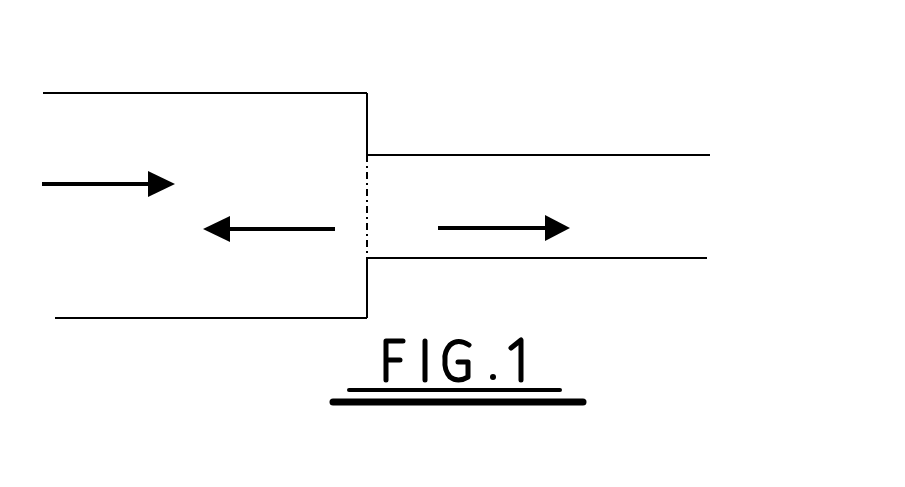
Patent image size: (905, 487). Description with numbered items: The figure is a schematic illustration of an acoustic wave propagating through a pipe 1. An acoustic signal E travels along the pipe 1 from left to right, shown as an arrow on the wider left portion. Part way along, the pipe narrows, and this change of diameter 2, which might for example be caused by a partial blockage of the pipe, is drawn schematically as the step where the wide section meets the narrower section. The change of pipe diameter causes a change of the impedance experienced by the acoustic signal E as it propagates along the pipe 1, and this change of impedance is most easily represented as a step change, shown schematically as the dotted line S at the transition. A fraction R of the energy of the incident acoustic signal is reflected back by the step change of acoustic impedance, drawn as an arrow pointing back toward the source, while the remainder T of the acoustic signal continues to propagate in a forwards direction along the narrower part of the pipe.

The pipe 1 is at (250, 93).
The change of diameter of the pipe 2 is at (368, 122).
The step change of acoustic impedance S is at (363, 183).
The acoustic signal E is at (108, 193).
The reflected fraction of acoustic signal energy R is at (269, 218).
The remainder of acoustic signal T is at (504, 217).